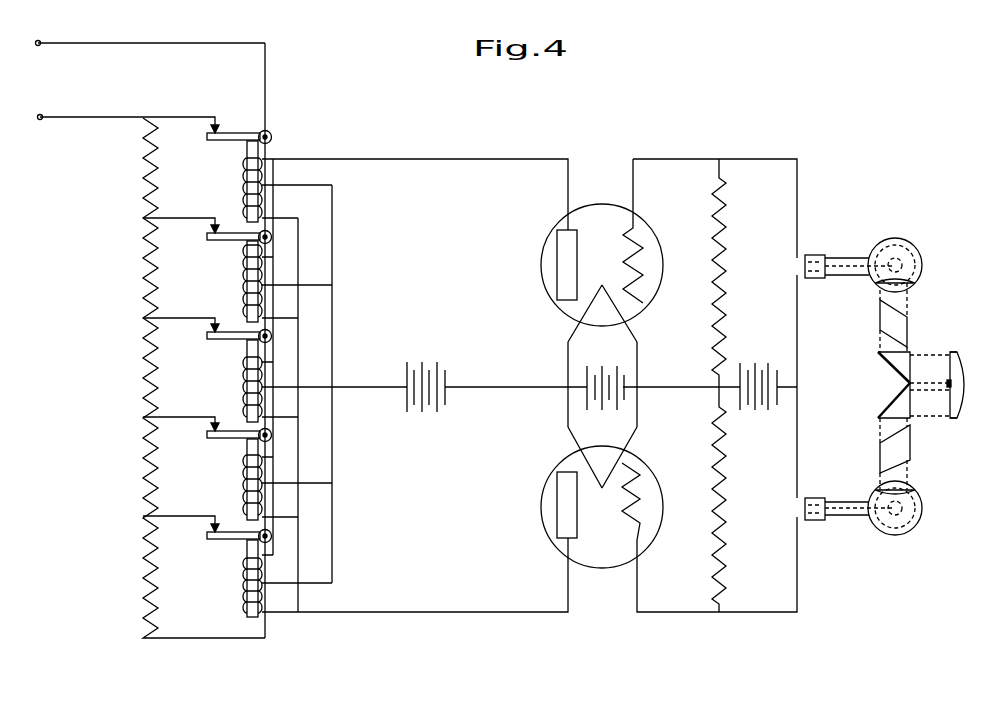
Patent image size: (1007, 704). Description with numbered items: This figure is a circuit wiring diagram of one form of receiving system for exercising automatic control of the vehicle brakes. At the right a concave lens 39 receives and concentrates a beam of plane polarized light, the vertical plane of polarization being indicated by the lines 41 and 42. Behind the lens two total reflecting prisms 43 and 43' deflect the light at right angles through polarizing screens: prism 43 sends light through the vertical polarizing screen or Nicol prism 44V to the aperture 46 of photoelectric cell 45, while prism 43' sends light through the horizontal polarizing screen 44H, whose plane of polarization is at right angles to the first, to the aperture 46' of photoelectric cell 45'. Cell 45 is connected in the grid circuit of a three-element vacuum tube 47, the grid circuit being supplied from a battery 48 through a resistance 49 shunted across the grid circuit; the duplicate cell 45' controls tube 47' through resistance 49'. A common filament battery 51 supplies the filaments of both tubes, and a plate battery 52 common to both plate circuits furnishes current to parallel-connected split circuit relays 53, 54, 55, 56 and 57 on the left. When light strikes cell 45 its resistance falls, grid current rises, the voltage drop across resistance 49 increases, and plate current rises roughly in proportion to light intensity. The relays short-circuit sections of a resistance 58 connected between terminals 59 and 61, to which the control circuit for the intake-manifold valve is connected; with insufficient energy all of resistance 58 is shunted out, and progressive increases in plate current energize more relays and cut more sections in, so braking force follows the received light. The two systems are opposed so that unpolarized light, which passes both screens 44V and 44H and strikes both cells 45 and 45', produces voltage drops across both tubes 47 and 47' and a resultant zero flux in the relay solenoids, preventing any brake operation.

The terminal 61 is at (37, 46).
The terminal 59 is at (39, 120).
The resistance 58 is at (142, 360).
The split circuit relay 53 is at (243, 178).
The split circuit relay 54 is at (243, 272).
The split circuit relay 55 is at (243, 366).
The split circuit relay 56 is at (243, 473).
The split circuit relay 57 is at (243, 560).
The plate battery 52 is at (445, 372).
The filament battery 51 is at (586, 403).
The vacuum tube 47 is at (608, 214).
The vacuum tube 47' is at (612, 548).
The resistance 49 is at (739, 273).
The resistance 49' is at (738, 499).
The battery 48 is at (758, 405).
The photoelectric cell 45 is at (889, 225).
The photoelectric cell 45' is at (892, 523).
The aperture 46 is at (871, 318).
The aperture 46' is at (868, 446).
The vertical polarizing screen 44V is at (902, 323).
The horizontal polarizing screen 44H is at (912, 445).
The total reflecting prism 43 is at (930, 338).
The total reflecting prism 43' is at (935, 424).
The concave lens 39 is at (963, 358).
The line 41 is at (965, 375).
The line 42 is at (978, 412).